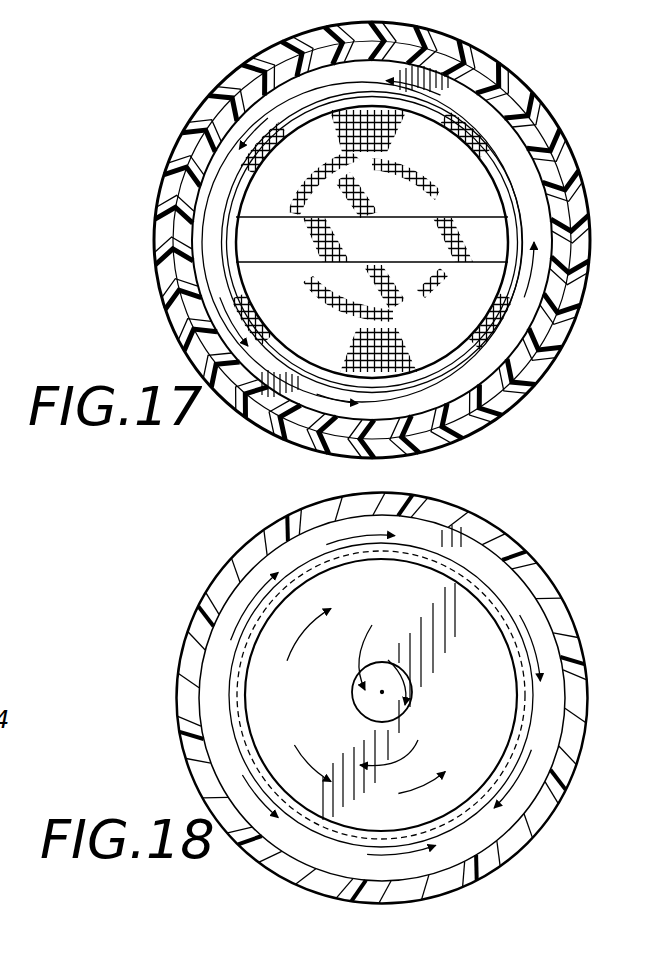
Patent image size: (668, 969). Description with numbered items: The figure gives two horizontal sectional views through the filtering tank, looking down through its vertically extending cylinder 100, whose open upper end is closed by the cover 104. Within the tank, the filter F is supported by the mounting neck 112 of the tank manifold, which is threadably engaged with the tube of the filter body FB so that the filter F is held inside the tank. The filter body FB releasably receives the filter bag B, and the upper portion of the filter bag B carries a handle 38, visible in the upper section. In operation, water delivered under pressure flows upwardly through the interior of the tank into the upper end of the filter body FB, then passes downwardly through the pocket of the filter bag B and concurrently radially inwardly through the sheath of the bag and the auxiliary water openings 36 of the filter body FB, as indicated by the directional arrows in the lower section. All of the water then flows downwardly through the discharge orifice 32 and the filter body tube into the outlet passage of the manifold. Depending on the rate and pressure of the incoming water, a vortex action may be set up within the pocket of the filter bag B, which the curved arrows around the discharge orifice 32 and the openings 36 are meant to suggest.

In FIG. 17, the cylinder 100 is at (587, 213).
In FIG. 18, the cylinder 100 is at (483, 534).
In FIG. 17, the cover 104 is at (573, 150).
In FIG. 17, the mounting neck 112 is at (505, 305).
In FIG. 17, the handle 38 is at (443, 213).
In FIG. 18, the auxiliary water openings 36 is at (533, 673).
In FIG. 18, the discharge orifice 32 is at (353, 687).
In FIG. 17, the filter bag B is at (483, 150).
In FIG. 18, the filter bag B is at (527, 740).
In FIG. 17, the filter F is at (513, 293).
In FIG. 18, the filter F is at (392, 672).
In FIG. 18, the filter body FB is at (533, 643).